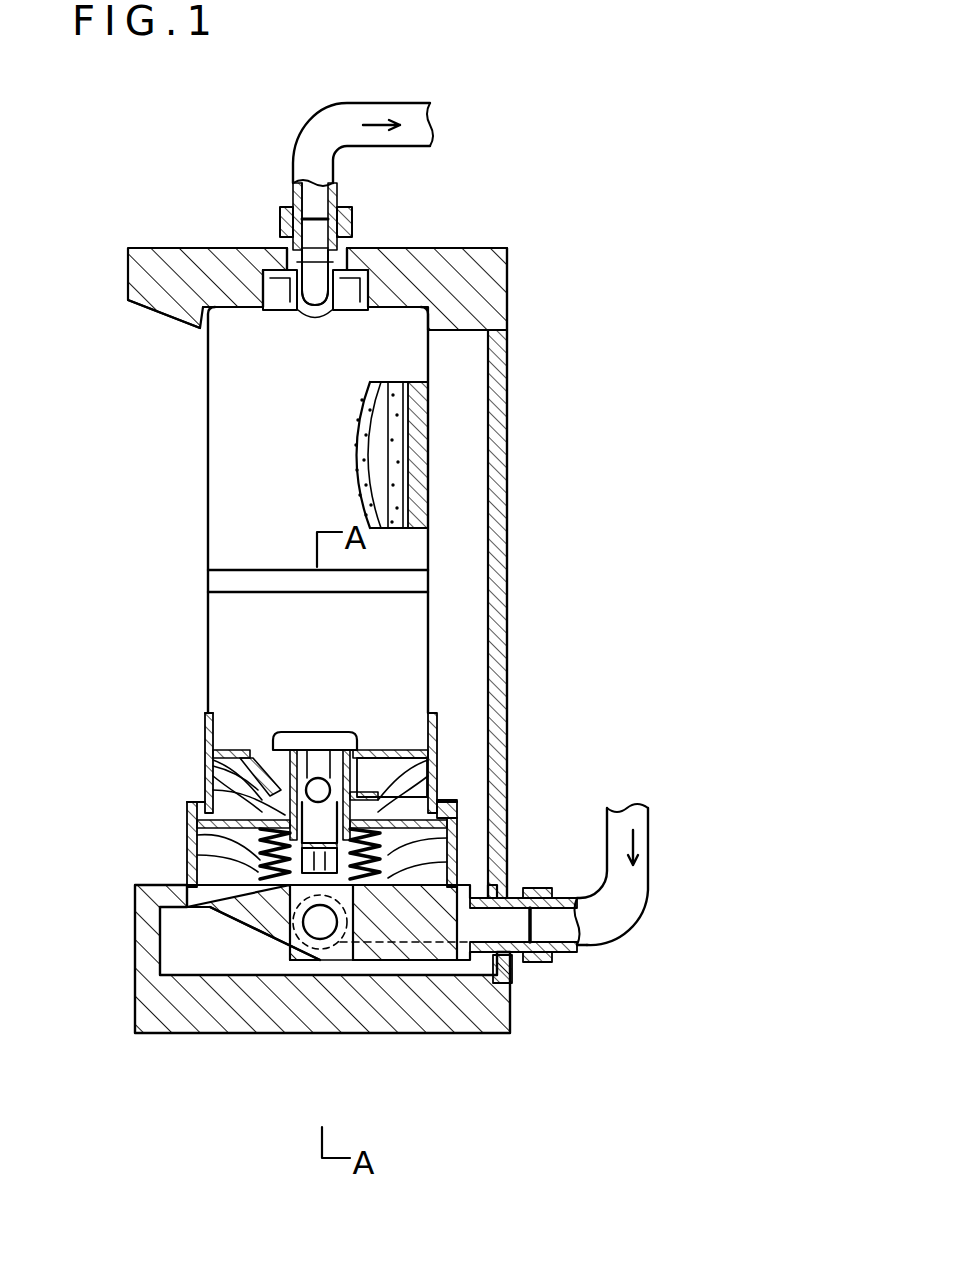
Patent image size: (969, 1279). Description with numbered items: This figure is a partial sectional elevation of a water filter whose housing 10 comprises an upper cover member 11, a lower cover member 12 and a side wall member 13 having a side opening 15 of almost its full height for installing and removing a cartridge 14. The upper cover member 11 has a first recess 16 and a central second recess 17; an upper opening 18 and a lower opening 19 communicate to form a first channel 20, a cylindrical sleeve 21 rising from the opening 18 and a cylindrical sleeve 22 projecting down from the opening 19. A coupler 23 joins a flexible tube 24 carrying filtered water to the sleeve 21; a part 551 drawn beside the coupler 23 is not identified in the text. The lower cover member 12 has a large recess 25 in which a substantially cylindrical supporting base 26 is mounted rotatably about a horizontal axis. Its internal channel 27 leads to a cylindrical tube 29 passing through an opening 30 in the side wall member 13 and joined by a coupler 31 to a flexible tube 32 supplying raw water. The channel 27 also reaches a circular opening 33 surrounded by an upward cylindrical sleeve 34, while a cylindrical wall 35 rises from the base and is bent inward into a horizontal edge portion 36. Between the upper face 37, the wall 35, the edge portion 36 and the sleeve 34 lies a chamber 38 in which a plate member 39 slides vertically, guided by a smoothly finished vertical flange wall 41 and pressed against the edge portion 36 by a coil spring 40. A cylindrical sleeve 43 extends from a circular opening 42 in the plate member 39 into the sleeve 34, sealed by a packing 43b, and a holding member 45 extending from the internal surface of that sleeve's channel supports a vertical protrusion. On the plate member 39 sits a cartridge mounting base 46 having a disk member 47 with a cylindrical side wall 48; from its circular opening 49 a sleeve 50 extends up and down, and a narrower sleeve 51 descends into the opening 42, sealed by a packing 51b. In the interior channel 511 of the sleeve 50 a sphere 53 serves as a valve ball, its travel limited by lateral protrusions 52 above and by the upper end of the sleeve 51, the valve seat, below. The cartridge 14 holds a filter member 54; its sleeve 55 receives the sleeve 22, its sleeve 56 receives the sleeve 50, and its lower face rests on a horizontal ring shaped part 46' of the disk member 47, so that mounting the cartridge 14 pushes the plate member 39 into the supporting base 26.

The housing 10 is at (513, 537).
The upper cover member 11 is at (128, 283).
The lower cover member 12 is at (185, 1007).
The side wall member 13 is at (507, 625).
The cartridge 14 is at (233, 522).
The side opening 15 is at (171, 330).
The first recess 16 is at (238, 310).
The second recess 17 is at (267, 322).
The upper opening 18 is at (293, 252).
The lower opening 19 is at (317, 317).
The first channel 20 is at (317, 280).
The cylindrical sleeve 21 is at (352, 240).
The cylindrical sleeve 22 is at (327, 312).
The coupler 23 is at (280, 211).
The flexible tube 24 is at (300, 133).
The large recess 25 is at (280, 967).
The supporting base 26 is at (200, 908).
The channel 27 is at (320, 935).
The cylindrical tube 29 is at (577, 947).
The opening 30 is at (508, 953).
The coupler 31 is at (547, 960).
The flexible tube 32 is at (647, 913).
The circular opening 33 is at (187, 912).
The cylindrical sleeve 34 is at (213, 850).
The cylindrical wall 35 is at (457, 838).
The horizontal edge portion 36 is at (448, 802).
The upper face 37 is at (460, 860).
The chamber 38 is at (185, 877).
The plate member 39 is at (205, 785).
The coil spring 40 is at (387, 955).
The vertical flange wall 41 is at (187, 833).
The circular opening 42 is at (400, 960).
The cylindrical sleeve 43 is at (195, 825).
The packing 43b is at (355, 960).
The holding member 45 is at (282, 960).
The cartridge mounting base 46 is at (189, 729).
The horizontal ring shaped part 46' is at (180, 663).
The disk member 47 is at (430, 737).
The cylindrical side wall 48 is at (436, 723).
The circular opening 49 is at (309, 745).
The sleeve 50 is at (342, 745).
The sleeve 51 is at (264, 750).
The packing 51b is at (205, 757).
The interior channel 511 is at (348, 795).
The lateral protrusions 52 is at (285, 745).
The sphere 53 is at (321, 745).
The filter member 54 is at (410, 460).
The sleeve 55 is at (350, 298).
The tube wall 551 is at (290, 195).
The sleeve 56 is at (432, 773).